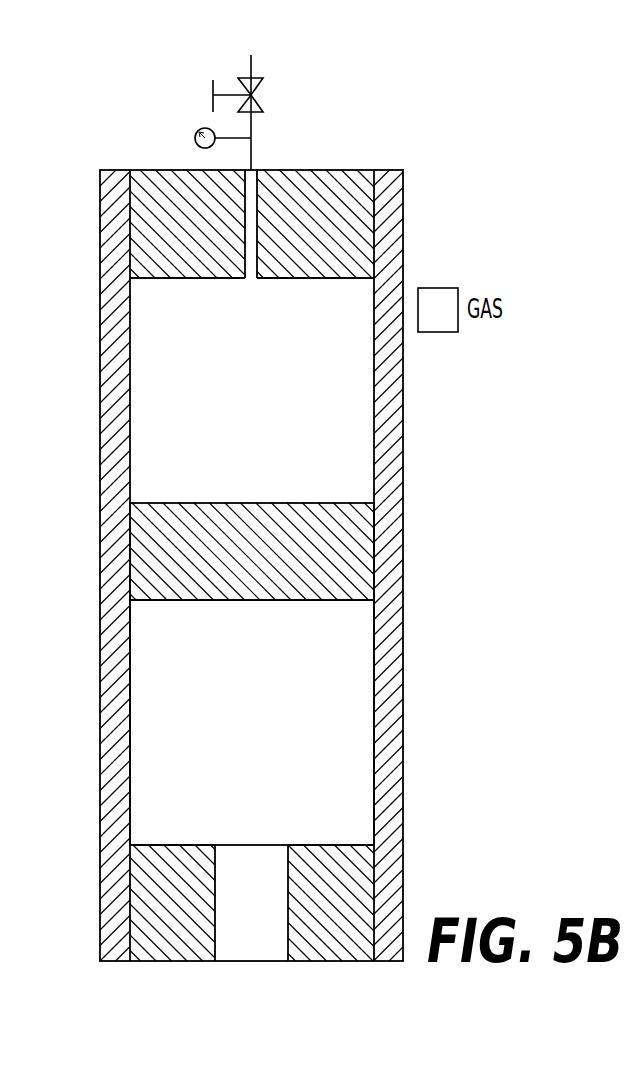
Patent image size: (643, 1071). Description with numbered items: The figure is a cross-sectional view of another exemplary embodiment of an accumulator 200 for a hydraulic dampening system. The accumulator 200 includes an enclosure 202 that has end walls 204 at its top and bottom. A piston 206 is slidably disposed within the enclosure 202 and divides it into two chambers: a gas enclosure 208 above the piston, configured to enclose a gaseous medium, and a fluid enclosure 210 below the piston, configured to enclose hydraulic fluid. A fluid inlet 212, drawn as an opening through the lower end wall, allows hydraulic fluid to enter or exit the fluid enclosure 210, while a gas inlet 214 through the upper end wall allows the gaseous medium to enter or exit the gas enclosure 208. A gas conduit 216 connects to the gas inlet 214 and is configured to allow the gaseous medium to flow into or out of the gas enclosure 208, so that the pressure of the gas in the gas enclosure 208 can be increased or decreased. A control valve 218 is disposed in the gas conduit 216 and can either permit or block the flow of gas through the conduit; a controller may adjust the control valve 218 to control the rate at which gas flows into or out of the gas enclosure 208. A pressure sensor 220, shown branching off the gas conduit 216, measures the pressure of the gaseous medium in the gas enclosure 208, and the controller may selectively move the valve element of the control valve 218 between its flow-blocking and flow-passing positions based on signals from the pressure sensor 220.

The accumulator 200 is at (283, 508).
The enclosure 202 is at (402, 582).
The end walls 204 is at (357, 220).
The piston 206 is at (267, 561).
The gas enclosure 208 is at (267, 405).
The fluid enclosure 210 is at (267, 746).
The fluid inlet 212 is at (253, 942).
The gas inlet 214 is at (256, 170).
The gas conduit 216 is at (251, 65).
The control valve 218 is at (256, 100).
The pressure sensor 220 is at (195, 138).